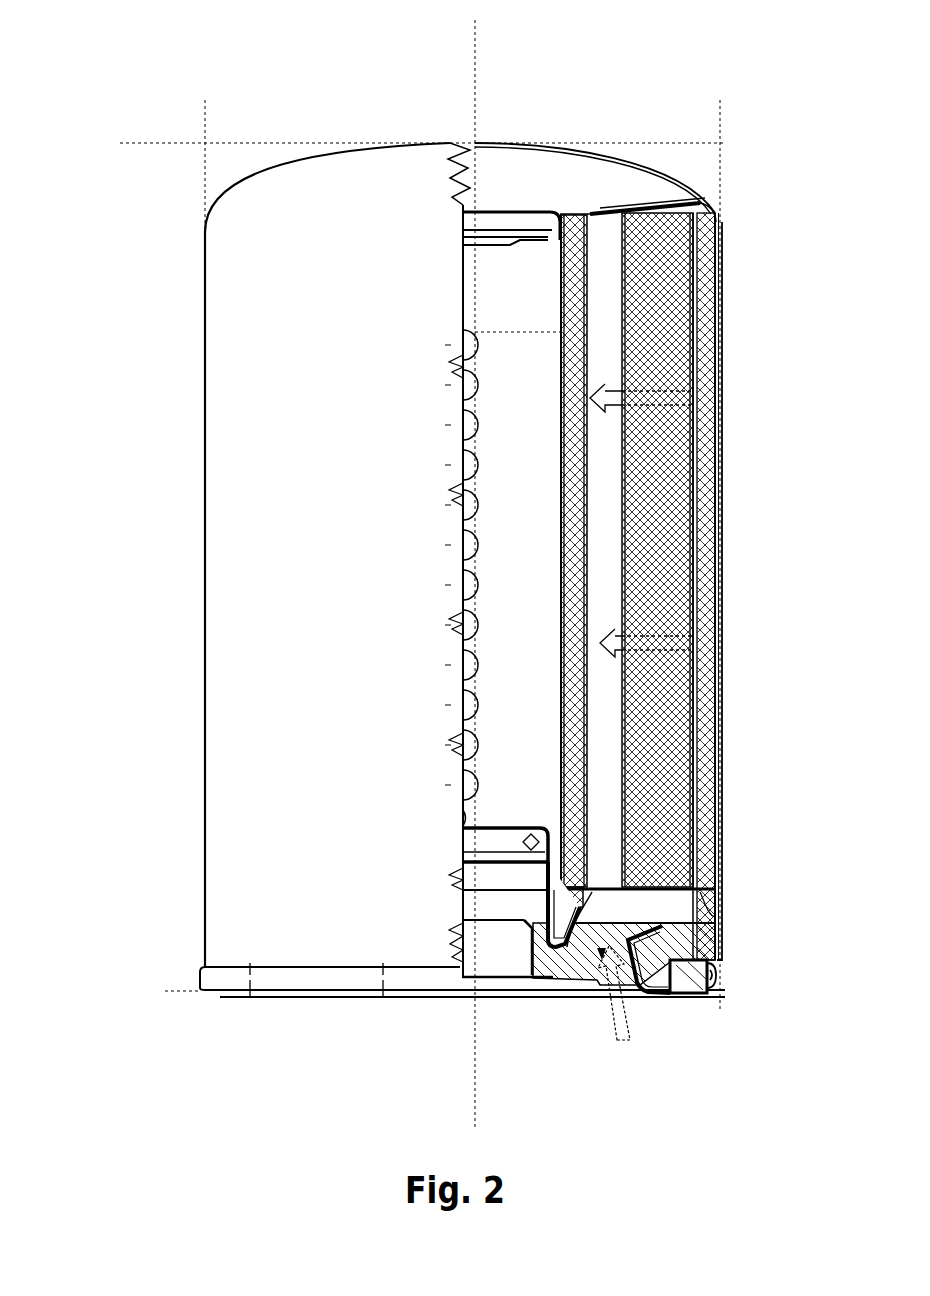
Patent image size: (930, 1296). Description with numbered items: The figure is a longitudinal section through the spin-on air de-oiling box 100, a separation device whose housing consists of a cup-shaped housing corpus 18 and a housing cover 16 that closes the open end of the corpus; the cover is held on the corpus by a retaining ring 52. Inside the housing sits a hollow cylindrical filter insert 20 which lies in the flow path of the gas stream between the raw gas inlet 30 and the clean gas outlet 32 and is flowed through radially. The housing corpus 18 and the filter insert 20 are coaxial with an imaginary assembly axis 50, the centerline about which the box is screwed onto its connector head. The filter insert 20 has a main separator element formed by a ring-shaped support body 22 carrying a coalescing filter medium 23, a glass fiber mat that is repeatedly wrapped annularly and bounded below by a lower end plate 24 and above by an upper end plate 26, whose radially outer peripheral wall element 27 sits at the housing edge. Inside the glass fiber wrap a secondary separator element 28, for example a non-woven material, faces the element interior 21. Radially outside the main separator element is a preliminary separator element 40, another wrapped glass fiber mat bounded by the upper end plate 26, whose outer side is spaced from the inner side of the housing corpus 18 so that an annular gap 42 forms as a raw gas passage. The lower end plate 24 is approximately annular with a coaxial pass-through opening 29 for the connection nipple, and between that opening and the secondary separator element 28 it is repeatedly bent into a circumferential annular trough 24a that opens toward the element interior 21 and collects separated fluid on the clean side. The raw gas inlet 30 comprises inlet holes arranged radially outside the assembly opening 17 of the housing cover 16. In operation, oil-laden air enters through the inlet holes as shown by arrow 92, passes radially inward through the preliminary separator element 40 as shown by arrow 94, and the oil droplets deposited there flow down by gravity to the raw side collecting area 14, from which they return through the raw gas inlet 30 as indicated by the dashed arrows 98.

The spin-on air de-oiling box 100 is at (120, 73).
The raw side collecting area 14 is at (654, 917).
The housing cover 16 is at (568, 990).
The assembly opening 17 is at (515, 903).
The housing corpus 18 is at (722, 575).
The filter insert 20 is at (540, 490).
The element interior 21 is at (560, 592).
The ring-shaped support body 22 is at (657, 795).
The coalescing filter medium 23 is at (658, 740).
The lower end plate 24 is at (715, 915).
The annular trough 24a is at (547, 913).
The upper end plate 26 is at (627, 207).
The radially outer peripheral wall element of the second end disc 27 is at (722, 222).
The secondary separator element 28 is at (588, 542).
The pass-through opening 29 is at (503, 851).
The raw gas inlet 30 is at (607, 1000).
The clean gas outlet 32 is at (504, 948).
The preliminary separator element 40 is at (718, 455).
The annular gap 42 is at (720, 627).
The assembly axis 50 is at (477, 342).
The retaining ring 52 is at (673, 995).
The arrow 92 is at (627, 1042).
The arrow 94 is at (604, 380).
The dashed arrows 98 is at (587, 907).